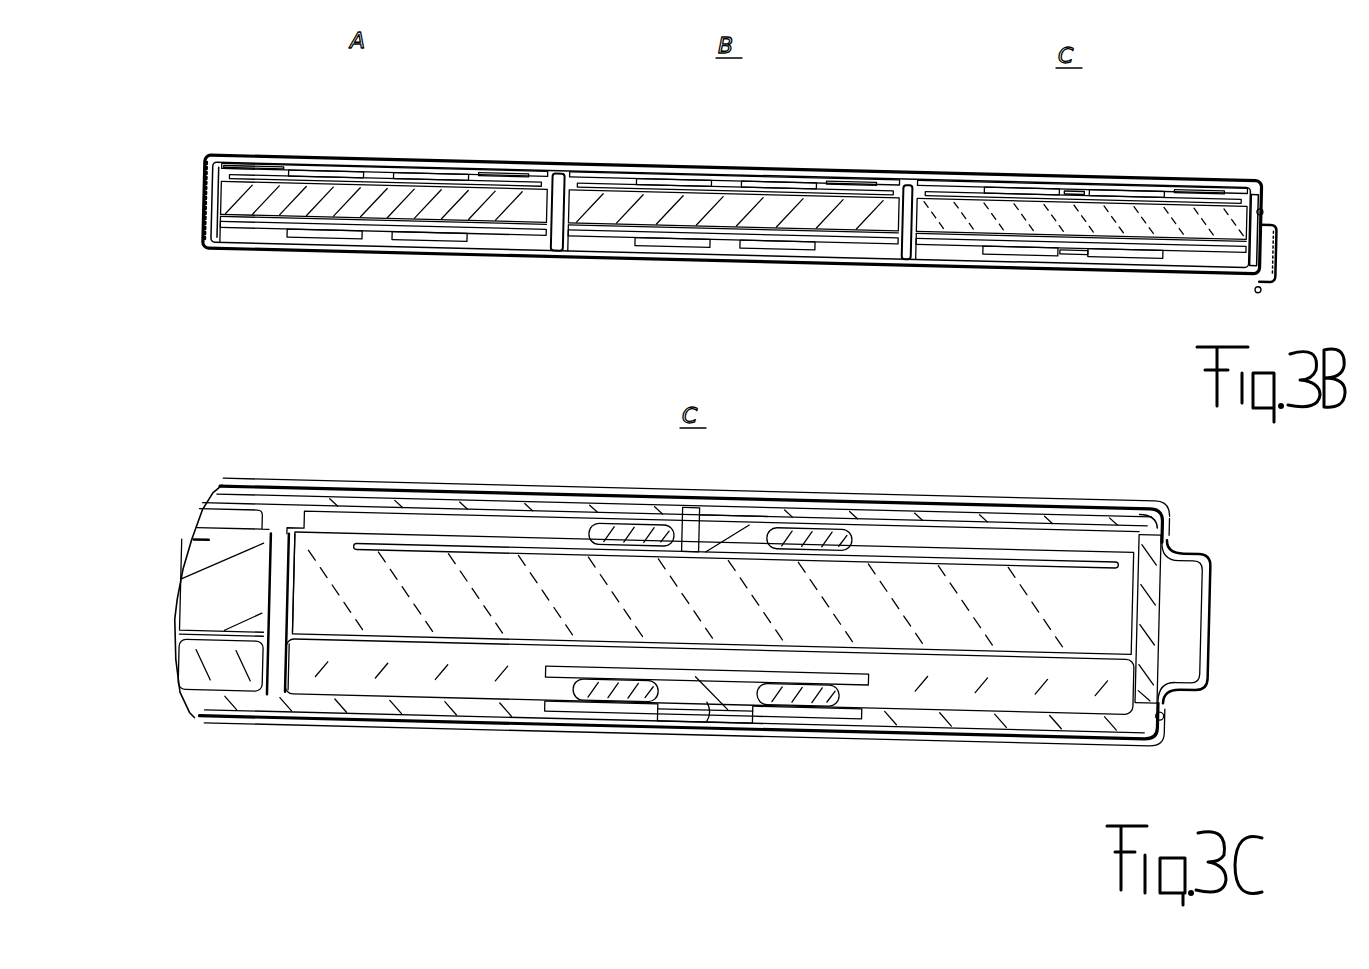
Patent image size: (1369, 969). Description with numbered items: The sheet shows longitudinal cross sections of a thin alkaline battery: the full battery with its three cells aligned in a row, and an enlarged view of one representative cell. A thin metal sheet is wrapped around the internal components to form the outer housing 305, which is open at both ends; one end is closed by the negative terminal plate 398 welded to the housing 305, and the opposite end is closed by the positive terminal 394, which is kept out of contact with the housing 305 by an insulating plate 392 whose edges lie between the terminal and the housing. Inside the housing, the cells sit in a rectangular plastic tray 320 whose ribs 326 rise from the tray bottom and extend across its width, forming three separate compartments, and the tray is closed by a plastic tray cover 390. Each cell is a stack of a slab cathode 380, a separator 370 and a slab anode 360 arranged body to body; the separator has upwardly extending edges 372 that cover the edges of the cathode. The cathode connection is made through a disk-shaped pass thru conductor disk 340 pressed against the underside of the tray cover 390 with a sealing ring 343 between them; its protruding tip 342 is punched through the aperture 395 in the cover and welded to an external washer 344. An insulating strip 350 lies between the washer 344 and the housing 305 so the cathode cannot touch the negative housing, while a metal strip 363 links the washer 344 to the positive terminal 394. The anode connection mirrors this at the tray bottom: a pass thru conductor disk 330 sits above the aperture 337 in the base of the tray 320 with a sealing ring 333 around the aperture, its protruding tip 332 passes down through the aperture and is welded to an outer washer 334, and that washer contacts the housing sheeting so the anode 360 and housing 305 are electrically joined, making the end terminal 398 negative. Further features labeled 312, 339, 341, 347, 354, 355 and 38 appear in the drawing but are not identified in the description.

In FIG. 3B, the outer housing 305 is at (445, 162).
In FIG. 3C, the outer housing 305 is at (1090, 503).
In FIG. 3C, the housing corner 312 is at (1170, 520).
In FIG. 3B, the plastic tray 320 is at (530, 254).
In FIG. 3C, the plastic tray 320 is at (1045, 722).
In FIG. 3B, the ribs 326 is at (556, 185).
In FIG. 3C, the ribs 326 is at (272, 520).
In FIG. 3C, the pass thru conductor disk 330 is at (700, 714).
In FIG. 3B, the protruding tip 332 is at (385, 250).
In FIG. 3C, the protruding tip 332 is at (720, 705).
In FIG. 3B, the sealing ring 333 is at (345, 248).
In FIG. 3C, the sealing ring 333 is at (585, 712).
In FIG. 3B, the outer washer 334 is at (1040, 258).
In FIG. 3C, the outer washer 334 is at (642, 726).
In FIG. 3C, the aperture 337 is at (760, 732).
In FIG. 3C, the connector line 339 is at (742, 727).
In FIG. 3C, the pass thru conductor disk 340 is at (693, 525).
In FIG. 3B, the upper plate 341 is at (285, 165).
In FIG. 3B, the protruding tip 342 is at (375, 175).
In FIG. 3C, the protruding tip 342 is at (725, 508).
In FIG. 3B, the sealing ring 343 is at (425, 170).
In FIG. 3C, the sealing ring 343 is at (828, 528).
In FIG. 3B, the external washer 344 is at (318, 172).
In FIG. 3C, the external washer 344 is at (580, 500).
In FIG. 3B, the current collector 347 is at (623, 190).
In FIG. 3C, the current collector 347 is at (432, 548).
In FIG. 3C, the insulating strip 350 is at (500, 490).
In FIG. 3B, the lower collector bar 354 is at (428, 252).
In FIG. 3C, the lower collector bar 354 is at (858, 726).
In FIG. 3C, the top layer 355 is at (920, 500).
In FIG. 3B, the anode 360 is at (262, 245).
In FIG. 3C, the anode 360 is at (945, 700).
In FIG. 3C, the metal strip 363 is at (1012, 510).
In FIG. 3B, the separator 370 is at (232, 252).
In FIG. 3C, the separator 370 is at (410, 645).
In FIG. 3C, the upwardly extending edges 372 is at (302, 522).
In FIG. 3B, the cathode 380 is at (232, 176).
In FIG. 3C, the cathode 380 is at (332, 545).
In FIG. 3B, the plastic tray cover 390 is at (490, 168).
In FIG. 3C, the plastic tray cover 390 is at (375, 522).
In FIG. 3B, the insulating plate 392 is at (1268, 188).
In FIG. 3C, the insulating plate 392 is at (1168, 722).
In FIG. 3B, the positive terminal 394 is at (1285, 226).
In FIG. 3C, the positive terminal 394 is at (1215, 615).
In FIG. 3B, the aperture 395 is at (1108, 185).
In FIG. 3B, the negative terminal plate 398 is at (212, 204).
In FIG. 3C, the tab hatch 38 is at (820, 530).